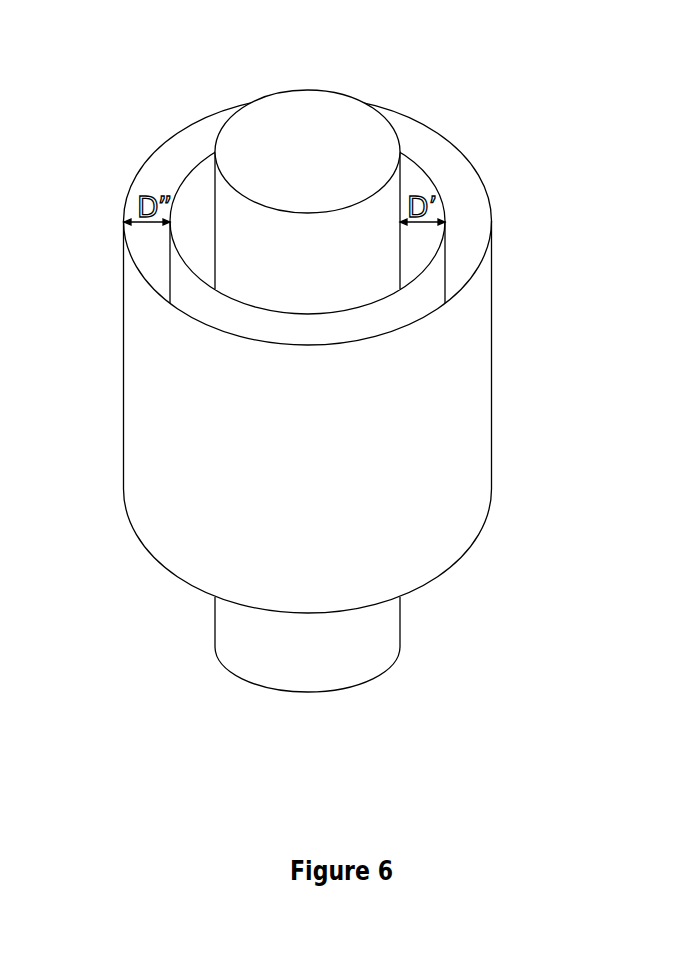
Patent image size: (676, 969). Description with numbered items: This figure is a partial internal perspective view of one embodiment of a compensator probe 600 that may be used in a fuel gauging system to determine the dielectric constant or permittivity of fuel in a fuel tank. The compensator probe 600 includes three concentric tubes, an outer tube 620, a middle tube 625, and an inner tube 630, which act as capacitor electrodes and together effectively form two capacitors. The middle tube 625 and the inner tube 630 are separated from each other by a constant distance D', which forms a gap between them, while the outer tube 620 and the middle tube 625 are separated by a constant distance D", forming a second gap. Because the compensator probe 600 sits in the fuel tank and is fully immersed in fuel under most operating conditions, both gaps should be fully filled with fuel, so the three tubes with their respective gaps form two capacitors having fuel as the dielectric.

The compensator probe 600 is at (557, 118).
The outer tube 620 is at (492, 372).
The middle tube 625 is at (187, 180).
The inner tube 630 is at (347, 93).